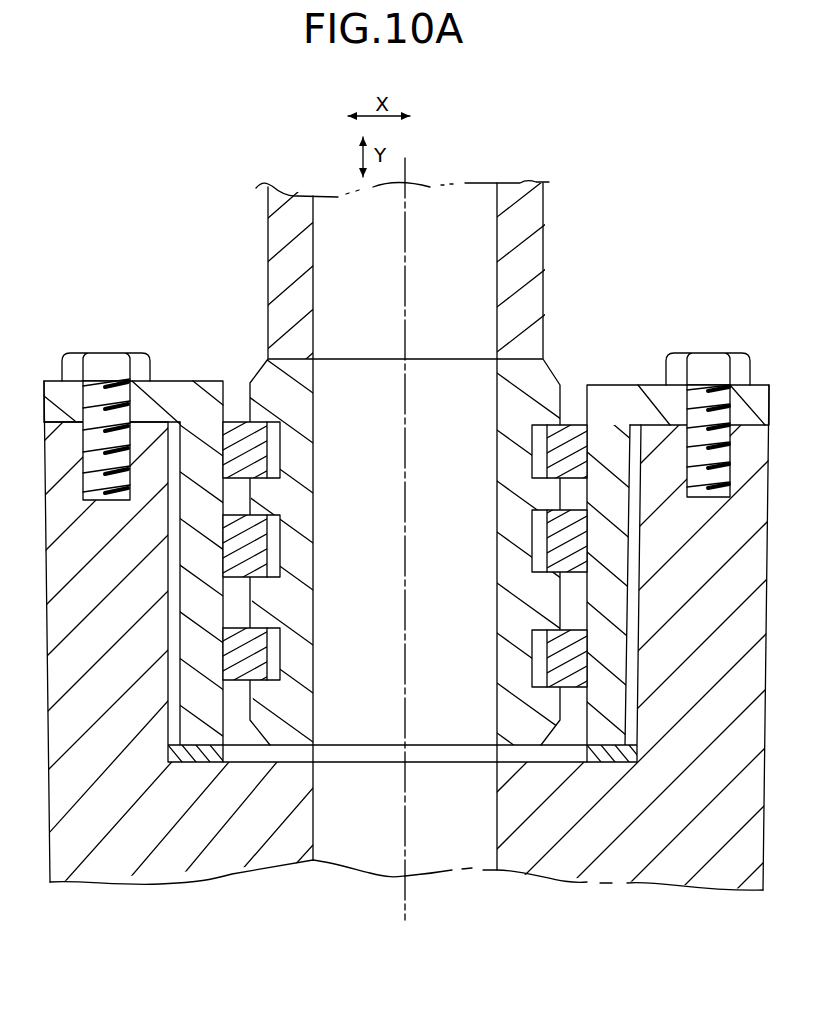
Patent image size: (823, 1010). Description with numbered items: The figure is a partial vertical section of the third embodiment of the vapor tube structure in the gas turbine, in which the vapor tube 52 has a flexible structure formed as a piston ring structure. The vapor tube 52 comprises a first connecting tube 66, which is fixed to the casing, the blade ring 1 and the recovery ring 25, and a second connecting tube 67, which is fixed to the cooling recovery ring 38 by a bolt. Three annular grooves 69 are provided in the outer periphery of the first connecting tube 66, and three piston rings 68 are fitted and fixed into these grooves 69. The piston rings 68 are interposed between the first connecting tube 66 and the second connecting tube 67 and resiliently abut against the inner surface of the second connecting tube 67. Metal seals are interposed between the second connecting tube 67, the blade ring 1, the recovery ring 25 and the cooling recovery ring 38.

The blade ring 1 is at (407, 587).
The recovery ring 25 is at (407, 587).
The cooling recovery ring 38 is at (656, 884).
The vapor tube of the piston ring structure 52 is at (407, 540).
The first connecting tube 66 is at (547, 297).
The second connecting tube 67 is at (607, 385).
The piston rings 68 is at (248, 657).
The annular grooves 69 is at (200, 762).